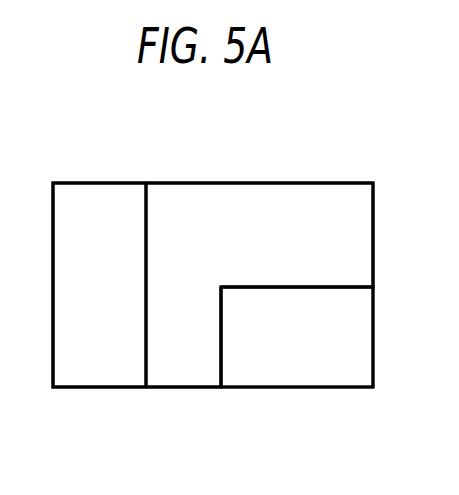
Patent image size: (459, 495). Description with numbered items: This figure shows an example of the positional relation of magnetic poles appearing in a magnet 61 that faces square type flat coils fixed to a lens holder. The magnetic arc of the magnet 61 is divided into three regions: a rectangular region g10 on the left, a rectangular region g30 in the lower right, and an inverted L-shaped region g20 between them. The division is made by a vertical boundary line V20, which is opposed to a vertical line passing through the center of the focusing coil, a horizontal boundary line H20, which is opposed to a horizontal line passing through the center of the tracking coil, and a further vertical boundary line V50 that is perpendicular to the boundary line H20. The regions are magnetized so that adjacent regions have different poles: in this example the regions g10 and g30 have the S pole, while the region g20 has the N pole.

The magnet 61 is at (233, 183).
The region g10 is at (73, 372).
The region g20 is at (185, 377).
The region g30 is at (353, 367).
The vertical boundary line V20 is at (143, 212).
The vertical boundary line V50 is at (222, 365).
The horizontal boundary line H20 is at (347, 287).